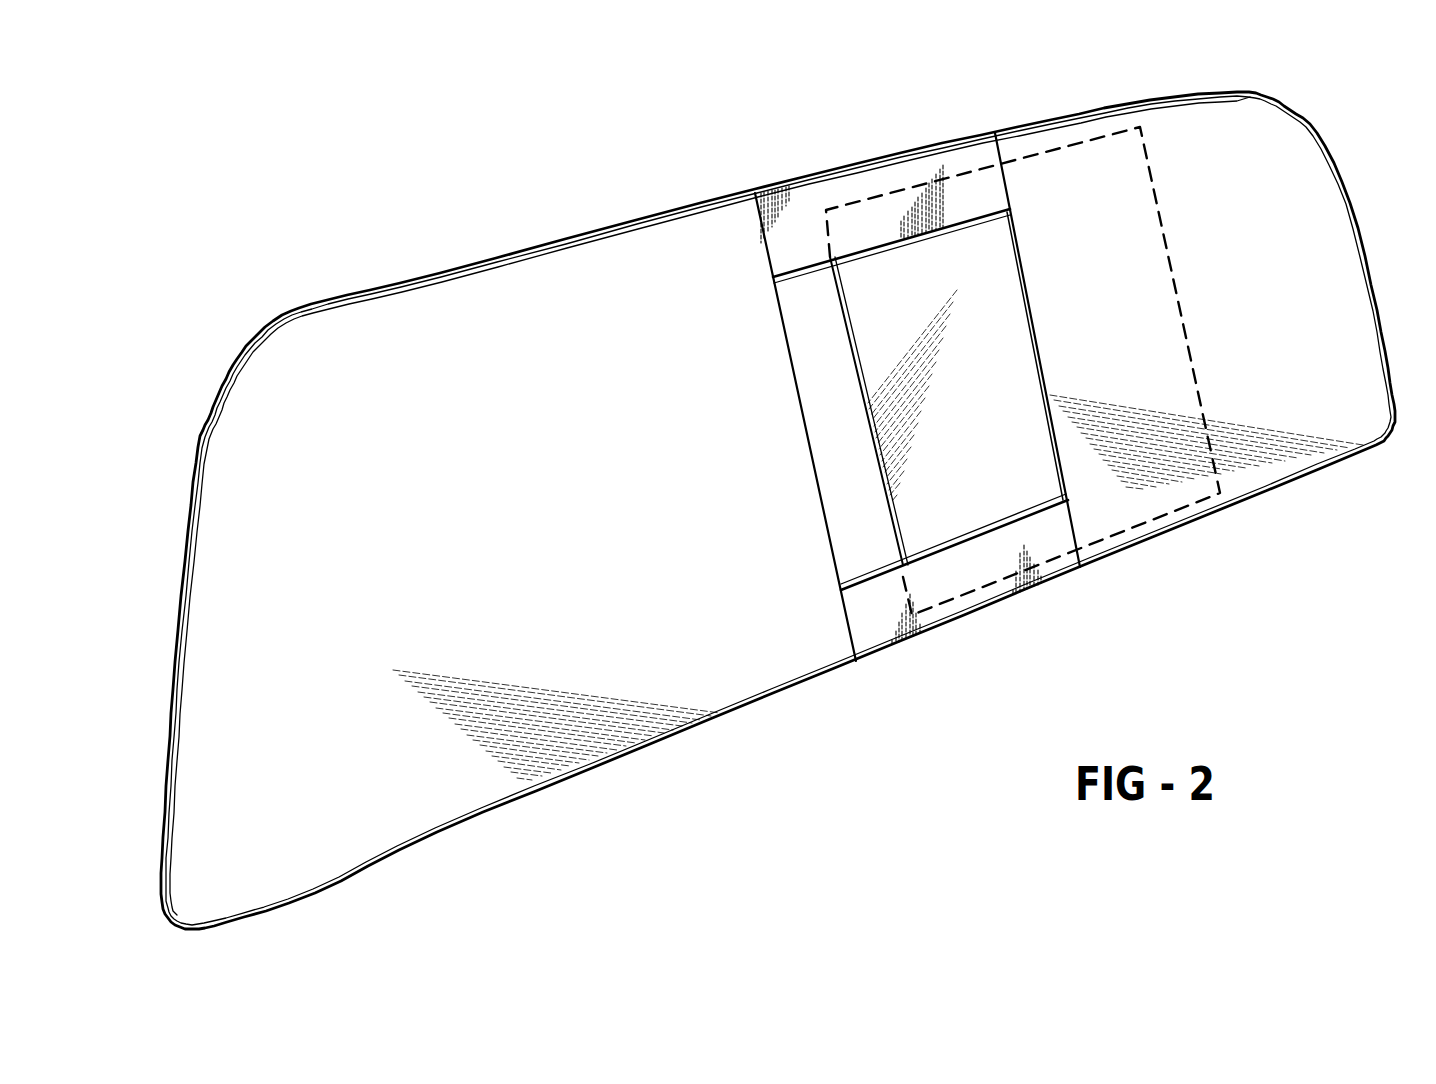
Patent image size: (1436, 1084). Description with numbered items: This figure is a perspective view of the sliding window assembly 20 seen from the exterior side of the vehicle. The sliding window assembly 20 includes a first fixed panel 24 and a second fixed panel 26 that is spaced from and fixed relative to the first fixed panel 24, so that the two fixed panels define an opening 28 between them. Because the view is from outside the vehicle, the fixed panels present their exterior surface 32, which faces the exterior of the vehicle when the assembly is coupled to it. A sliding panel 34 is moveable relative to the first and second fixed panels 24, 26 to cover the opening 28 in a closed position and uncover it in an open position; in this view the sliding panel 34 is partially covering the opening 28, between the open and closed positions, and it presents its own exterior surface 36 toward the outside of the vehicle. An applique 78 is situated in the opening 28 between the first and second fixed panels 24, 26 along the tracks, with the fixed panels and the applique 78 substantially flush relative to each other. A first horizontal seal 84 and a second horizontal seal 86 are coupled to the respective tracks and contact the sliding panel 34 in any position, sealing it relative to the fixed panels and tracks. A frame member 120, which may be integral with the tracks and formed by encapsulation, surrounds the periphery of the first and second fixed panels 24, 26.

The sliding window assembly 20 is at (778, 487).
The first fixed panel 24 is at (1283, 135).
The second fixed panel 26 is at (432, 308).
The opening 28 is at (820, 283).
The exterior surface 32 is at (355, 357).
The sliding panel 34 is at (1030, 493).
The exterior surface 36 is at (962, 250).
The applique 78 is at (837, 192).
The first horizontal seal 84 is at (1042, 502).
The second horizontal seal 86 is at (900, 225).
The frame member 120 is at (1257, 92).